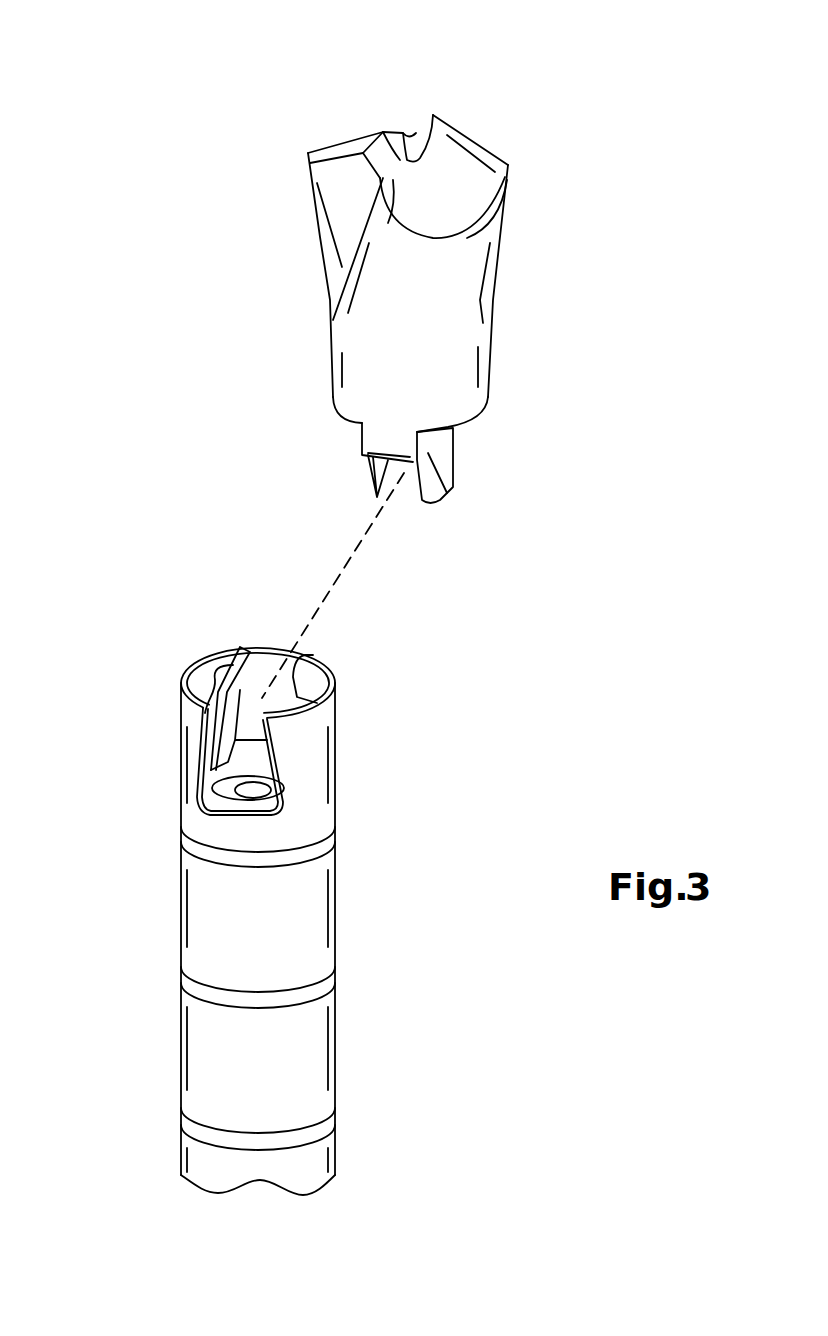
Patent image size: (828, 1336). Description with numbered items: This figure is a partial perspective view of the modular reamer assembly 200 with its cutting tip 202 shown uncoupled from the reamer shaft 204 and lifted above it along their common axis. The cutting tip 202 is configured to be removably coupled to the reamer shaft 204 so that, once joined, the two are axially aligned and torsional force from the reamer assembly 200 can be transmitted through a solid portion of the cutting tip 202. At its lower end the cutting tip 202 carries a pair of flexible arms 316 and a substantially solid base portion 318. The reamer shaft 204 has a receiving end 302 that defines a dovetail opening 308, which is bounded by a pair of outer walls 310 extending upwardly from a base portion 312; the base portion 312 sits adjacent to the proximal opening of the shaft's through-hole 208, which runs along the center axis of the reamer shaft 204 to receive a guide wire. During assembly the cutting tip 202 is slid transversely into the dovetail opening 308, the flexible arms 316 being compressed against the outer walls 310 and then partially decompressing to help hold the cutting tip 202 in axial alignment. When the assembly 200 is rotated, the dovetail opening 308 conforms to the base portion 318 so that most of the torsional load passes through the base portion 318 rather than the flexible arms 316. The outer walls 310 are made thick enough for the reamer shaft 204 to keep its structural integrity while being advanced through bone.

The reamer assembly 200 is at (285, 110).
The cutting tip 202 is at (463, 168).
The flexible arms 316 is at (367, 472).
The base portion 318 is at (362, 437).
The receiving end 302 is at (370, 690).
The outer walls 310 is at (185, 715).
The dovetail opening 308 is at (210, 790).
The base portion 312 is at (242, 787).
The through-hole 208 is at (285, 787).
The reamer shaft 204 is at (318, 910).